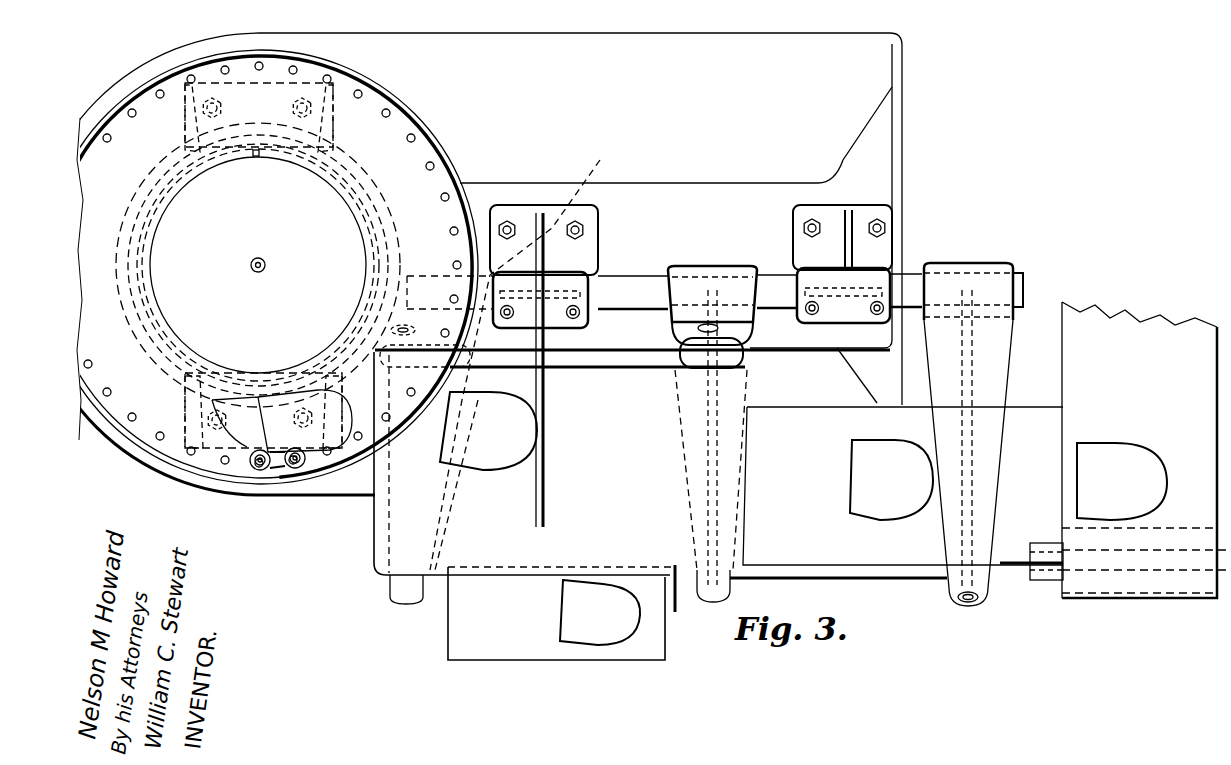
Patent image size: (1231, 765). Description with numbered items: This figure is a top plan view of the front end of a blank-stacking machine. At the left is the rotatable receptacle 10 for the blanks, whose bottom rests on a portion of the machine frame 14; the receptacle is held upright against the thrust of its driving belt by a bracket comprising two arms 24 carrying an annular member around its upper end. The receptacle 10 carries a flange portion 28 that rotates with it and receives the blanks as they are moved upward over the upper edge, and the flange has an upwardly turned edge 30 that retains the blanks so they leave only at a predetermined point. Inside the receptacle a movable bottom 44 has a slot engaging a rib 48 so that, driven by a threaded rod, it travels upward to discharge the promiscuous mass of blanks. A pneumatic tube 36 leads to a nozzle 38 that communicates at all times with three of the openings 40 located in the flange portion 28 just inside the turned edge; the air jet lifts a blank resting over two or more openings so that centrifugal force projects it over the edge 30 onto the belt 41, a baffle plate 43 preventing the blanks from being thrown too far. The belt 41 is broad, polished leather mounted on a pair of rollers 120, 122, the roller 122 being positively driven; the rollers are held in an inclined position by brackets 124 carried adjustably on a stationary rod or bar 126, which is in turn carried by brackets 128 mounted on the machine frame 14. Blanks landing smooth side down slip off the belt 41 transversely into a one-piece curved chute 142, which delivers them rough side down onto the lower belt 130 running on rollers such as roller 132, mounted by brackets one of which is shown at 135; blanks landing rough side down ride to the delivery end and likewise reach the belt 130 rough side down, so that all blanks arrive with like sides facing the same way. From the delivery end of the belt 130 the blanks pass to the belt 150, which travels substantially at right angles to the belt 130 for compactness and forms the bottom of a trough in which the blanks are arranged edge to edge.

The receptacle 10 is at (330, 197).
The machine frame 14 is at (882, 187).
The arms 24 is at (285, 93).
The flange portion 28 is at (442, 148).
The upwardly turned edge 30 is at (441, 184).
The tube 36 is at (297, 473).
The nozzle 38 is at (270, 473).
The openings 40 is at (413, 132).
The belt 41 is at (467, 543).
The baffle plate 43 is at (547, 428).
The movable bottom 44 is at (205, 208).
The rib 48 is at (256, 157).
The roller 120 is at (748, 358).
The roller 122 is at (380, 362).
The brackets 124 is at (678, 328).
The stationary rod or bar 126 is at (628, 287).
The brackets 128 is at (878, 250).
The second carrier or belt 130 is at (858, 550).
The roller 132 is at (950, 612).
The bracket 135 is at (995, 588).
The chute 142 is at (467, 630).
The belt 150 is at (1175, 345).